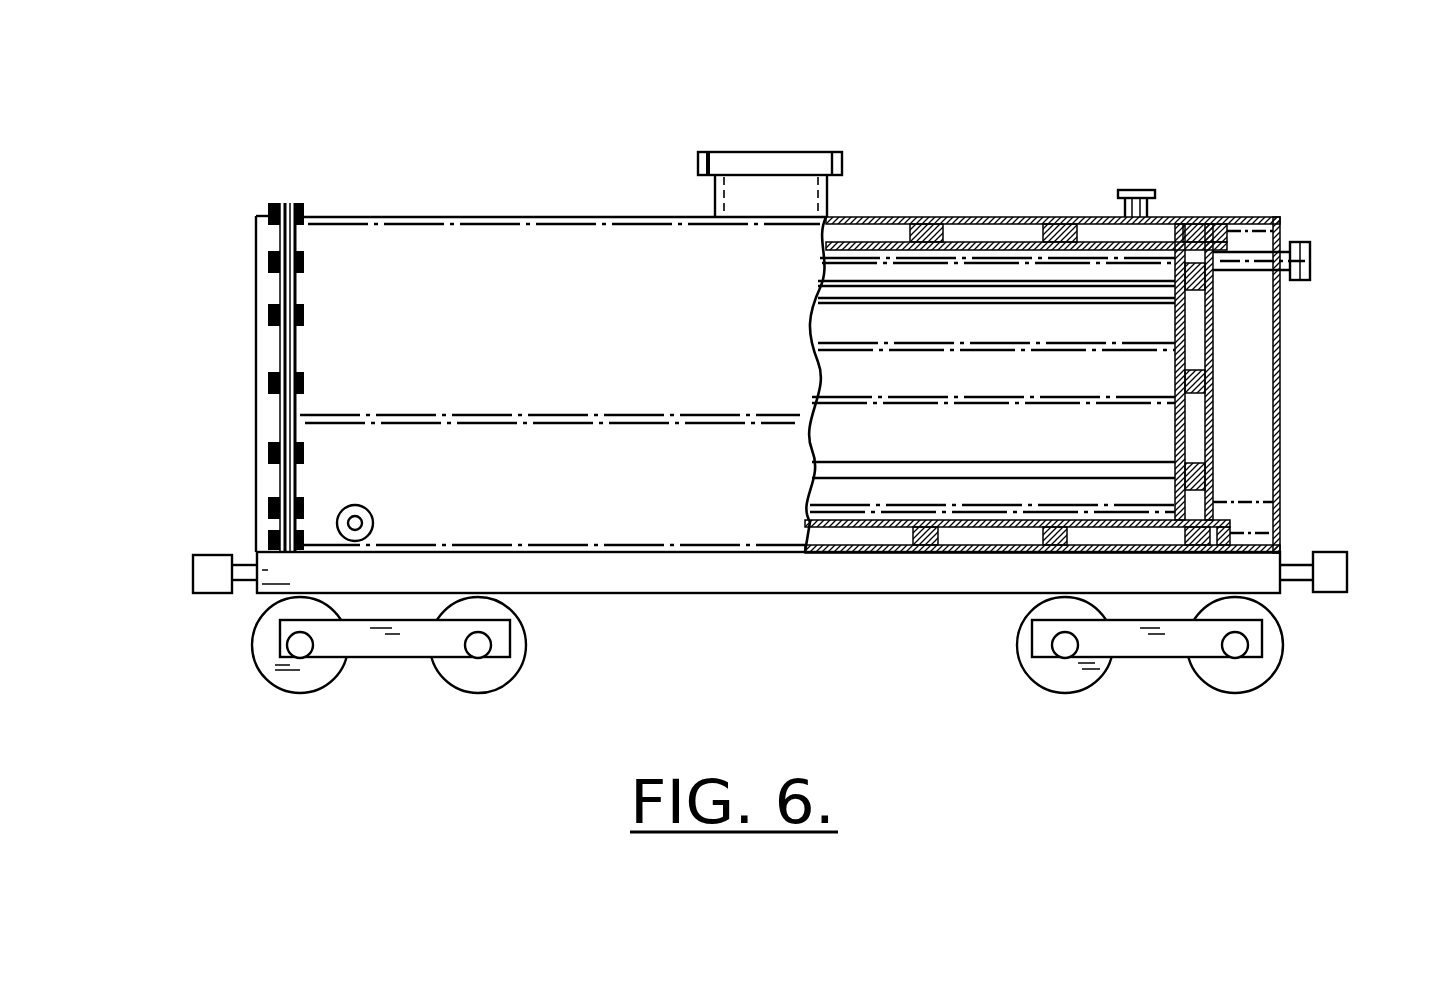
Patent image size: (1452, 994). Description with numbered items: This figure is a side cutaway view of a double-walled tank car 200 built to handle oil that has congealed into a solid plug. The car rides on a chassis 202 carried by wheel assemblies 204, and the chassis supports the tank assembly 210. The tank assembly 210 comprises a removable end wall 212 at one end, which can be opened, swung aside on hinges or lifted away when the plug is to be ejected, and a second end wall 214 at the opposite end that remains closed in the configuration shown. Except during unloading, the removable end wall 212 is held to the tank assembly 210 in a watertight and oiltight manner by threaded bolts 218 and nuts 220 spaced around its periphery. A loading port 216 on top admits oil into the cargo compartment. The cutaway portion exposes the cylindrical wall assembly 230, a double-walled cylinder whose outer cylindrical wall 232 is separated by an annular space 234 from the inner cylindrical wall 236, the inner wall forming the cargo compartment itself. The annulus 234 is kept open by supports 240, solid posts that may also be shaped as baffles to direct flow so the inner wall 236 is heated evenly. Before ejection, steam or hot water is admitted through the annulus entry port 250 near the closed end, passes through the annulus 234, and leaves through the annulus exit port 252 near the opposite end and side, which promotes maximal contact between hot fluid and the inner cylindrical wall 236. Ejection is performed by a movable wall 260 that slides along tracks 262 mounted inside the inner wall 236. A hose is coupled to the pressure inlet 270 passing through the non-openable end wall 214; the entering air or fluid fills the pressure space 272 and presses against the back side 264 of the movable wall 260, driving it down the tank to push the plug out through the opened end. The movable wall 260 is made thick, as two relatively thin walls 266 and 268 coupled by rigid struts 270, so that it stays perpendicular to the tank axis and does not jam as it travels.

The double-walled tank car 200 is at (366, 158).
The chassis 202 is at (823, 596).
The wheel assemblies 204 is at (393, 657).
The tank assembly 210 is at (488, 215).
The removable end wall 212 is at (255, 318).
The second end wall 214 is at (1283, 408).
The loading port 216 is at (812, 150).
The threaded bolts 218 is at (300, 384).
The nuts 220 is at (255, 438).
The cylindrical wall assembly 230 is at (620, 243).
The outer cylindrical wall 232 is at (932, 214).
The annular space 234 is at (985, 232).
The inner cylindrical wall 236 is at (1021, 232).
The supports 240 is at (912, 534).
The annulus entry port 250 is at (1138, 190).
The annulus exit port 252 is at (343, 507).
The movable wall 260 is at (1217, 278).
The tracks 262 is at (877, 458).
The back side of movable wall 264 is at (1215, 457).
The thin wall 266 is at (1178, 335).
The thin wall 268 is at (1180, 447).
The pressure inlet 270 is at (1310, 254).
The pressure space 272 is at (1250, 383).